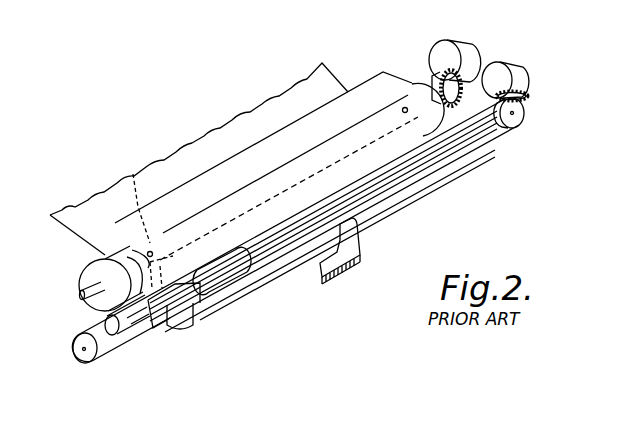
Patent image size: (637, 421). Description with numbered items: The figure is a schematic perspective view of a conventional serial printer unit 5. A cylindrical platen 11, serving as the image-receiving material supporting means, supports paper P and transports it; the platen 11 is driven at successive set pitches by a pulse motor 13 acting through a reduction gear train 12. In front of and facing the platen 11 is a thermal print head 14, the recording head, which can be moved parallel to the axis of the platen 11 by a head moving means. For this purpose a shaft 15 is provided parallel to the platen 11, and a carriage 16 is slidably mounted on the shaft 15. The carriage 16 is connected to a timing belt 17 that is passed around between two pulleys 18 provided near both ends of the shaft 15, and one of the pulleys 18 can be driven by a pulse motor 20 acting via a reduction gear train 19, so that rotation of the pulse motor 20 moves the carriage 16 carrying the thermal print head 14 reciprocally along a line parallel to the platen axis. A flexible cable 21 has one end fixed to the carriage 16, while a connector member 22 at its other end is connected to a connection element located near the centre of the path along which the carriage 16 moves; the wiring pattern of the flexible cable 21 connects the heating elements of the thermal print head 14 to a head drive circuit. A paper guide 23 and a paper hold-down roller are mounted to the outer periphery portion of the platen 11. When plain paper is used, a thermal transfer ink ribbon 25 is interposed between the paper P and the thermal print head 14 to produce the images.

The paper P is at (88, 212).
The serial printer unit 5 is at (422, 40).
The cylindrical platen 11 is at (92, 273).
The reduction gear train 12 is at (433, 62).
The pulse motor 13 is at (462, 55).
The thermal print head 14 is at (133, 172).
The shaft 15 is at (133, 327).
The carriage 16 is at (163, 316).
The timing belt 17 is at (110, 348).
The pulleys 18 is at (82, 363).
The reduction gear train 19 is at (530, 96).
The pulse motor 20 is at (507, 63).
The flexible cable 21 is at (258, 277).
The connector member 22 is at (347, 268).
The paper guide 23 is at (305, 163).
The thermal transfer ink ribbon 25 is at (98, 304).